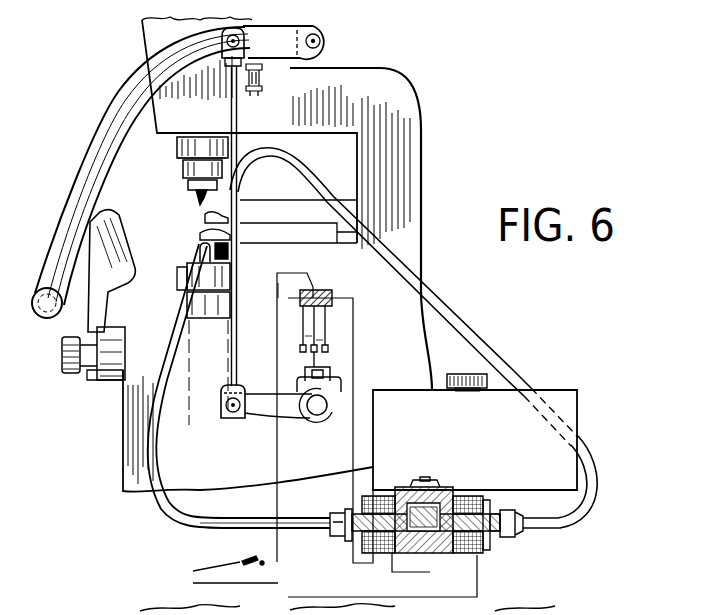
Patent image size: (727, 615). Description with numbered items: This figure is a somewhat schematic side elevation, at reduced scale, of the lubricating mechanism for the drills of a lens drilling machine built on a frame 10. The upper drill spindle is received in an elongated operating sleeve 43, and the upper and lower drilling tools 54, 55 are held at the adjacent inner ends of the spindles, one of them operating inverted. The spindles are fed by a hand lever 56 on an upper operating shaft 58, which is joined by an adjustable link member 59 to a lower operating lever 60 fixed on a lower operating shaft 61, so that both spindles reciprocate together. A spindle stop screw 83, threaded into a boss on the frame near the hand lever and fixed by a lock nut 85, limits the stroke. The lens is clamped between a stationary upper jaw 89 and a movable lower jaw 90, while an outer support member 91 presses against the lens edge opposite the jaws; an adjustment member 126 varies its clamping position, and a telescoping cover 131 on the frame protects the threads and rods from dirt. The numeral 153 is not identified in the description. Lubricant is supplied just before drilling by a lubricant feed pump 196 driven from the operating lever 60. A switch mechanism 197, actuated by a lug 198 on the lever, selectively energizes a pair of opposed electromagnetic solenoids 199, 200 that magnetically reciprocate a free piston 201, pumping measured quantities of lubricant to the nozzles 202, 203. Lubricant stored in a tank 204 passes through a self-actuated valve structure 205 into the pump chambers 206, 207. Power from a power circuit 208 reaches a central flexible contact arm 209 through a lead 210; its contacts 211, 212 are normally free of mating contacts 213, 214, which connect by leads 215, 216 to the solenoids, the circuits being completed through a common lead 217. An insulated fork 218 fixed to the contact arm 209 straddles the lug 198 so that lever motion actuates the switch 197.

The frame 10 is at (421, 125).
The operating sleeve 43 is at (184, 171).
The upper drilling tool 54 is at (200, 202).
The lower drilling tool 55 is at (200, 247).
The hand lever 56 is at (95, 154).
The upper operating shaft 58 is at (312, 41).
The adjustable link member 59 is at (237, 122).
The lower operating lever 60 is at (230, 421).
The lower operating shaft 61 is at (329, 414).
The spindle stop screw 83 is at (259, 62).
The lock nut 85 is at (262, 76).
The upper jaw 89 is at (205, 218).
The lower jaw 90 is at (200, 234).
The outer support member 91 is at (110, 263).
The adjustment member 126 is at (62, 355).
The telescoping cover 131 is at (108, 381).
The base 153 is at (347, 605).
The lubricant feed pump 196 is at (452, 491).
The switch mechanism 197 is at (331, 295).
The lug 198 is at (341, 393).
The electromagnetic solenoid 199 is at (380, 496).
The electromagnetic solenoid 200 is at (470, 497).
The free piston 201 is at (440, 555).
The nozzle 202 is at (286, 159).
The nozzle 203 is at (135, 404).
The tank 204 is at (540, 427).
The self-actuated valve structure 205 is at (452, 490).
The pump chamber 206 is at (418, 553).
The pump chamber 207 is at (452, 554).
The power circuit 208 is at (212, 571).
The central flexible contact arm 209 is at (318, 328).
The lead 210 is at (281, 470).
The contact 211 is at (303, 345).
The contact 212 is at (324, 340).
The mating contact 213 is at (313, 350).
The mating contact 214 is at (330, 350).
The lead 215 is at (284, 437).
The lead 216 is at (353, 459).
The common lead 217 is at (400, 577).
The insulated fork 218 is at (331, 374).